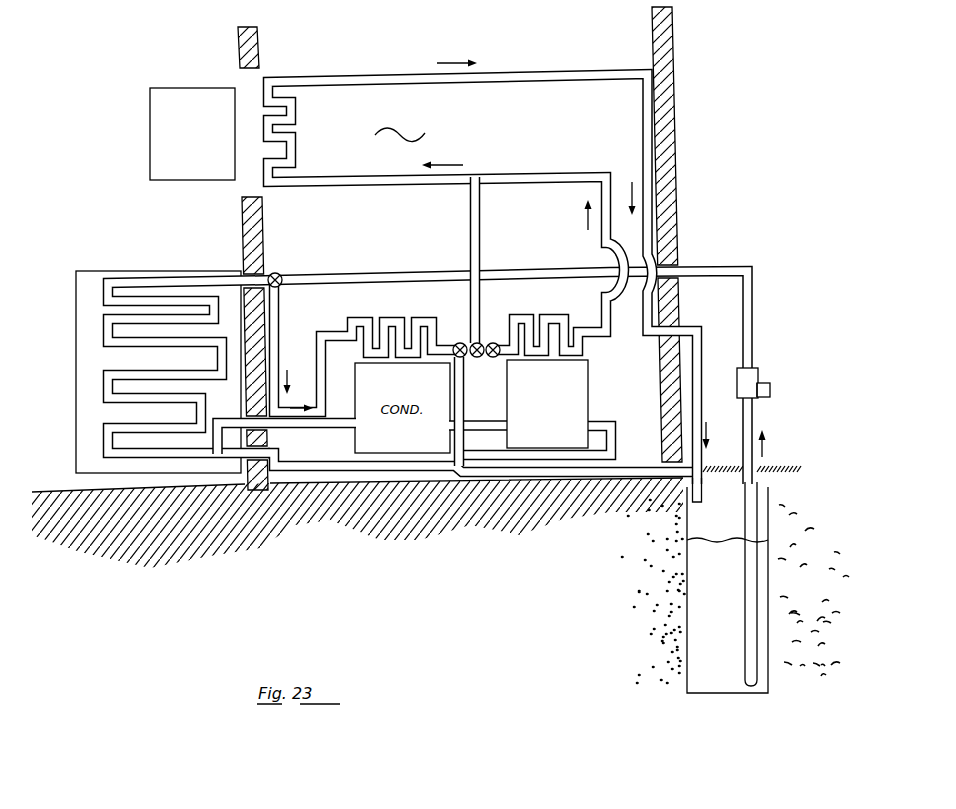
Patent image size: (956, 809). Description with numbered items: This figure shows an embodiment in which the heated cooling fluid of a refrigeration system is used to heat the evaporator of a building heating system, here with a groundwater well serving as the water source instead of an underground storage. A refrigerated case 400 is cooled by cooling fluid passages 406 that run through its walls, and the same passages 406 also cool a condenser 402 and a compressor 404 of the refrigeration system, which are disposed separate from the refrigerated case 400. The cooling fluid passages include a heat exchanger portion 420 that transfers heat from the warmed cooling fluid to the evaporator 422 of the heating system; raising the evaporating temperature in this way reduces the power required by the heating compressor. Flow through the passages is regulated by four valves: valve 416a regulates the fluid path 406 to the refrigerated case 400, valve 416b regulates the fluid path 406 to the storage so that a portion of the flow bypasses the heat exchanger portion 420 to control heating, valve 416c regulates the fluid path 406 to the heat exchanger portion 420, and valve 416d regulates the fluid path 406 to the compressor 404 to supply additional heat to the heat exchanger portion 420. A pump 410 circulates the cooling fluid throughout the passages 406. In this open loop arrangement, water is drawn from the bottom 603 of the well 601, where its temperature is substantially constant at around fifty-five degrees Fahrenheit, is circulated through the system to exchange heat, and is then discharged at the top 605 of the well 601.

The refrigerated case 400 is at (167, 266).
The condenser 402 is at (374, 432).
The compressor 404 is at (589, 400).
The cooling fluid passages 406 is at (103, 336).
The pump 410 is at (736, 386).
The valve 416a is at (280, 272).
The valve 416b is at (457, 342).
The valve 416c is at (480, 362).
The valve 416d is at (493, 342).
The heat exchanger portion 420 is at (268, 76).
The evaporator 422 is at (148, 114).
The well 601 is at (687, 551).
The bottom 603 is at (732, 690).
The top 605 is at (685, 487).